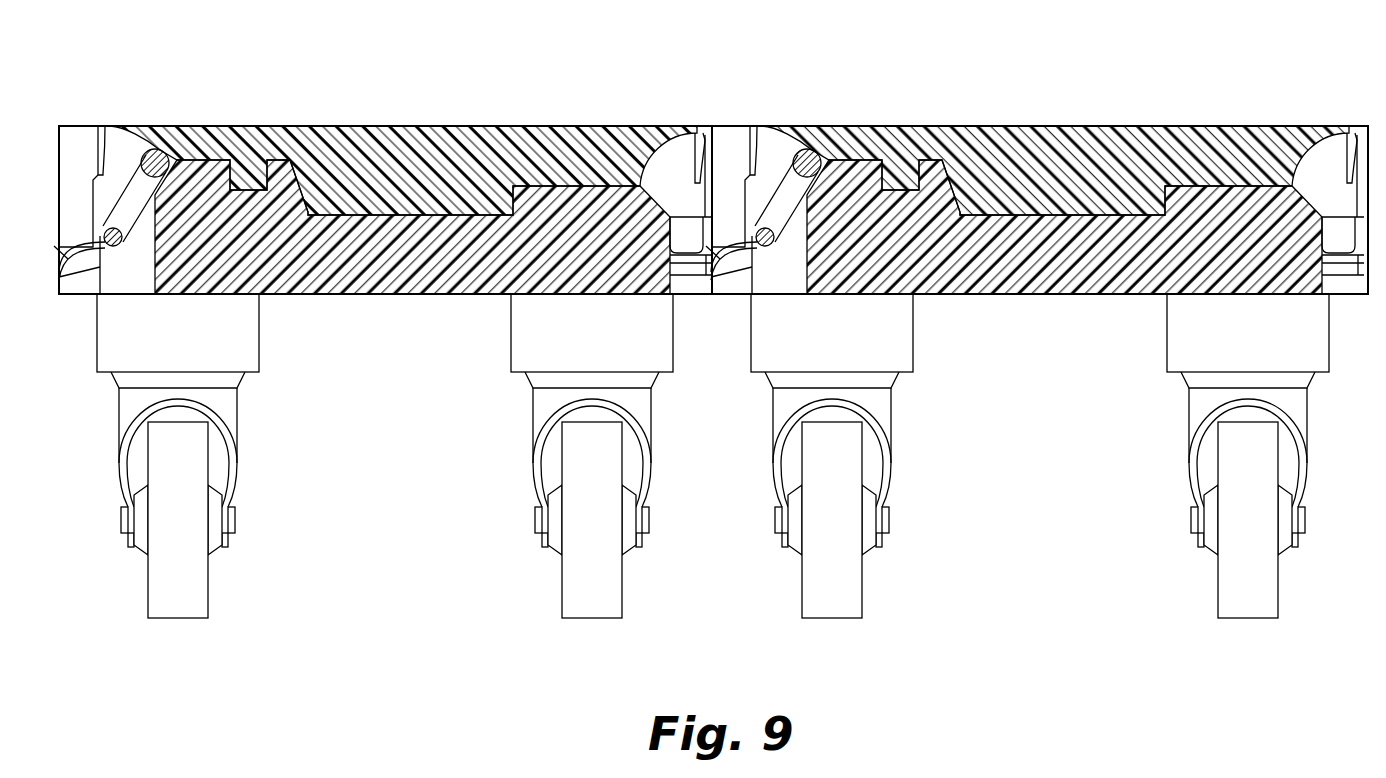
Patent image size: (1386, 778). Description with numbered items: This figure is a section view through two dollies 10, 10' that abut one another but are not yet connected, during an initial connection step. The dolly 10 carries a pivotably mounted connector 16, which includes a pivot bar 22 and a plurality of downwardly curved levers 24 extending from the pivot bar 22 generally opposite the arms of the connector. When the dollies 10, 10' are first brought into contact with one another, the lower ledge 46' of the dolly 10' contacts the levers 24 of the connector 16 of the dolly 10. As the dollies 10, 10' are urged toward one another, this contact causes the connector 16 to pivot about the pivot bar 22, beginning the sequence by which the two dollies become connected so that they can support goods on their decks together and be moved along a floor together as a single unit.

The dolly 10' is at (383, 159).
The dolly 10 is at (1063, 159).
The connector 16 is at (811, 125).
The pivot bar 22 is at (795, 226).
The levers 24 is at (730, 246).
The lower ledge 46' is at (728, 320).